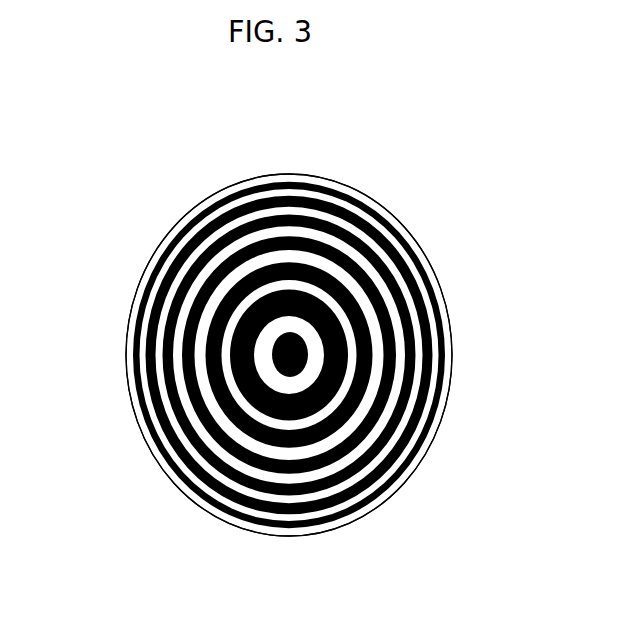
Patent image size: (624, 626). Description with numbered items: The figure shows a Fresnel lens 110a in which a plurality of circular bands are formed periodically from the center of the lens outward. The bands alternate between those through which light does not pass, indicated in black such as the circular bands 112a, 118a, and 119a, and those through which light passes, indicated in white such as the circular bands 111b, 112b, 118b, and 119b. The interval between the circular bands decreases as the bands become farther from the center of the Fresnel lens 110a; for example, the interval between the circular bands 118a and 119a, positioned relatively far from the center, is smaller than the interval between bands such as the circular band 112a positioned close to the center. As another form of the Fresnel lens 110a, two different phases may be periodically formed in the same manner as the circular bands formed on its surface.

The Fresnel lens 110a is at (276, 339).
The circular band 112a is at (258, 367).
The circular band 112b is at (270, 433).
The circular band 111b is at (197, 410).
The circular band 118a is at (447, 322).
The circular band 118b is at (447, 365).
The circular band 119a is at (451, 404).
The circular band 119b is at (437, 442).